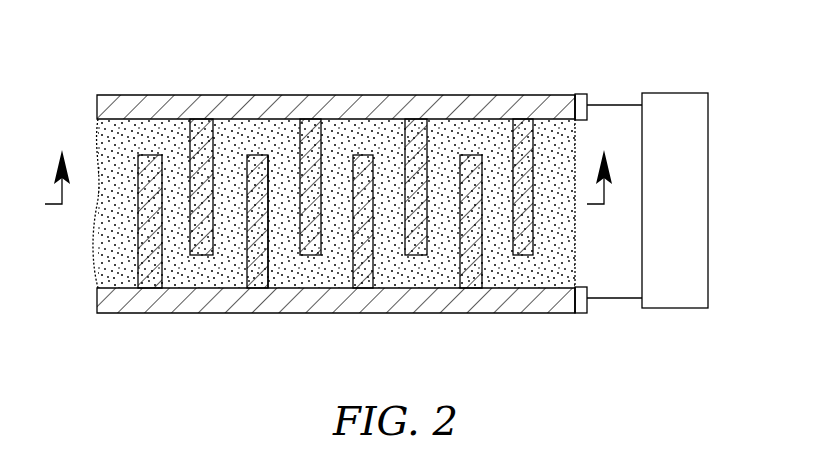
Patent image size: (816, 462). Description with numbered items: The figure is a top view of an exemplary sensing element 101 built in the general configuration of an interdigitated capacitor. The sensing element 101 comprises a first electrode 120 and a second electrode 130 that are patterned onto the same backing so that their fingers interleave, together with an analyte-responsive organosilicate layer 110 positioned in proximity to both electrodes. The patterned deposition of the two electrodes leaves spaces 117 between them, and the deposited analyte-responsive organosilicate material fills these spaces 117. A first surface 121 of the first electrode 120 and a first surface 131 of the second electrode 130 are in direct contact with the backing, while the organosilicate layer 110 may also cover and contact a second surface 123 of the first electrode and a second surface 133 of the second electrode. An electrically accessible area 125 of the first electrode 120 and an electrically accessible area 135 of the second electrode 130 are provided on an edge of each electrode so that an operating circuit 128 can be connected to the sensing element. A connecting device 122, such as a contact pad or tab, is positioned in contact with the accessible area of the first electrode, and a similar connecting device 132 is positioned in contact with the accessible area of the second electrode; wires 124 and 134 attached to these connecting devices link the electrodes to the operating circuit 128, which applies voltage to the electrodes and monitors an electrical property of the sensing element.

The sensing element 101 is at (134, 54).
The analyte-responsive organosilicate layer 110 is at (568, 259).
The spaces 117 is at (407, 272).
The first electrode 120 is at (411, 302).
The first surface of first electrode 121 is at (268, 258).
The connecting device 122 is at (588, 305).
The second surface of first electrode 123 is at (268, 265).
The wire 124 is at (627, 299).
The electrically accessible area of first electrode 125 is at (573, 300).
The operating circuit 128 is at (677, 93).
The second electrode 130 is at (474, 105).
The first surface of second electrode 131 is at (217, 150).
The connecting device 132 is at (586, 94).
The second surface of second electrode 133 is at (211, 138).
The wire 134 is at (617, 104).
The electrically accessible area of second electrode 135 is at (568, 105).